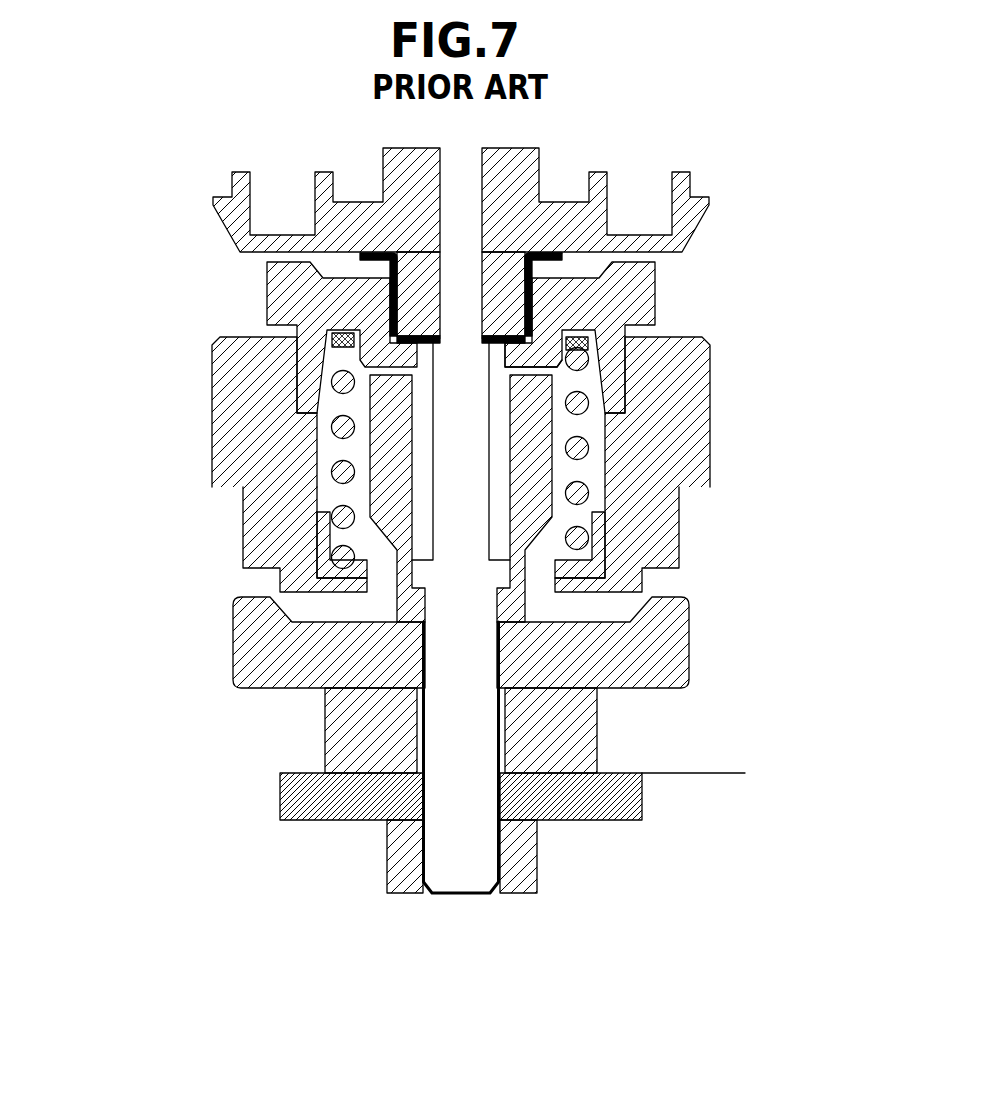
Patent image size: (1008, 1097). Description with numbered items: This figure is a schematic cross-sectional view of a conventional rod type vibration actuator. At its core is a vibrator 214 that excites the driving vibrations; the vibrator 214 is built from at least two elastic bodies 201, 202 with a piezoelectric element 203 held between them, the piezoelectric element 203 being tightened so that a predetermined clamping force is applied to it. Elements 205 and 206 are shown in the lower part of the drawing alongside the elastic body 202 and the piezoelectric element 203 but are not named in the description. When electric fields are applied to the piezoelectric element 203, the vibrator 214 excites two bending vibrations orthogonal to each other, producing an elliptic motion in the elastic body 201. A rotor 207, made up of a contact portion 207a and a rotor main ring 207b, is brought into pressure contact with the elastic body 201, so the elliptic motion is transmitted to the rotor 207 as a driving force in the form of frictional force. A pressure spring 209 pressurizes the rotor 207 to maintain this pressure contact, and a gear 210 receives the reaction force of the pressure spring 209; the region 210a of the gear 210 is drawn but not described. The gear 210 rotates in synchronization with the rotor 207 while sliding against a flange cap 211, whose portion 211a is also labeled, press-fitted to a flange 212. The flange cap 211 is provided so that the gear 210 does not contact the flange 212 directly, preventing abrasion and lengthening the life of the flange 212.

The elastic body 201 is at (690, 640).
The elastic body 202 is at (628, 793).
The piezoelectric element 203 is at (600, 725).
The piston tube 205 is at (468, 847).
The lower bushing 206 is at (597, 881).
The rotor 207 is at (365, 470).
The contact portion 207a is at (388, 540).
The rotor main ring 207b is at (215, 425).
The pressure spring 209 is at (590, 493).
The gear 210 is at (267, 298).
The retainer projection 210a is at (590, 362).
The flange cap 211 is at (533, 300).
The washer bent portion 211a is at (540, 266).
The flange 212 is at (690, 192).
The vibrator 214 is at (568, 647).